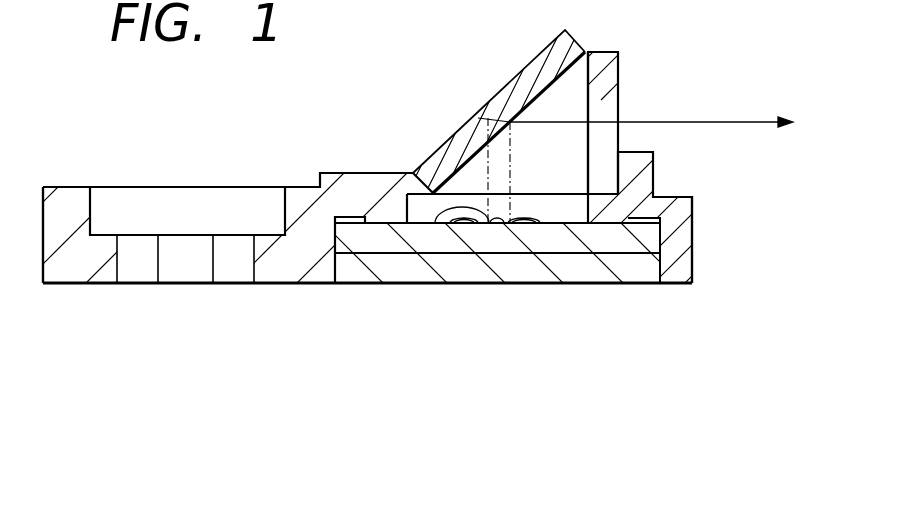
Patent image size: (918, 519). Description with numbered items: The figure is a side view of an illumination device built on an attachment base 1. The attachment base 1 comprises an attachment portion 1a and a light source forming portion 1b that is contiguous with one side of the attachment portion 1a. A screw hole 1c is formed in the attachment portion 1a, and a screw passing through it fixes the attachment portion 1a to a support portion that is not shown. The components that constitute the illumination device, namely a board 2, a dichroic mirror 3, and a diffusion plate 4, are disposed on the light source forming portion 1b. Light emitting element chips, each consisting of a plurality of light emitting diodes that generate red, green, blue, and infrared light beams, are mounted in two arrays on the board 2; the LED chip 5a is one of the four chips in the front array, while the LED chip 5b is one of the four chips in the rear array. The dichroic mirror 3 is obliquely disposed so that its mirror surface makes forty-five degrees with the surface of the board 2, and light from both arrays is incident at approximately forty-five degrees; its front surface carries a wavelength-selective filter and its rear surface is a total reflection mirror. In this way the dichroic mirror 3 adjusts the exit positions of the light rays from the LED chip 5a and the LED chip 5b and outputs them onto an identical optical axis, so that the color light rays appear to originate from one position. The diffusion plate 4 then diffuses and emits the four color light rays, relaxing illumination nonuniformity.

The attachment base 1 is at (84, 176).
The attachment portion 1a is at (65, 283).
The light source forming portion 1b is at (693, 270).
The screw hole 1c is at (158, 258).
The board 2 is at (603, 248).
The dichroic mirror 3 is at (528, 83).
The diffusion plate 4 is at (613, 75).
The LED chip 5a is at (492, 225).
The LED chip 5b is at (435, 225).